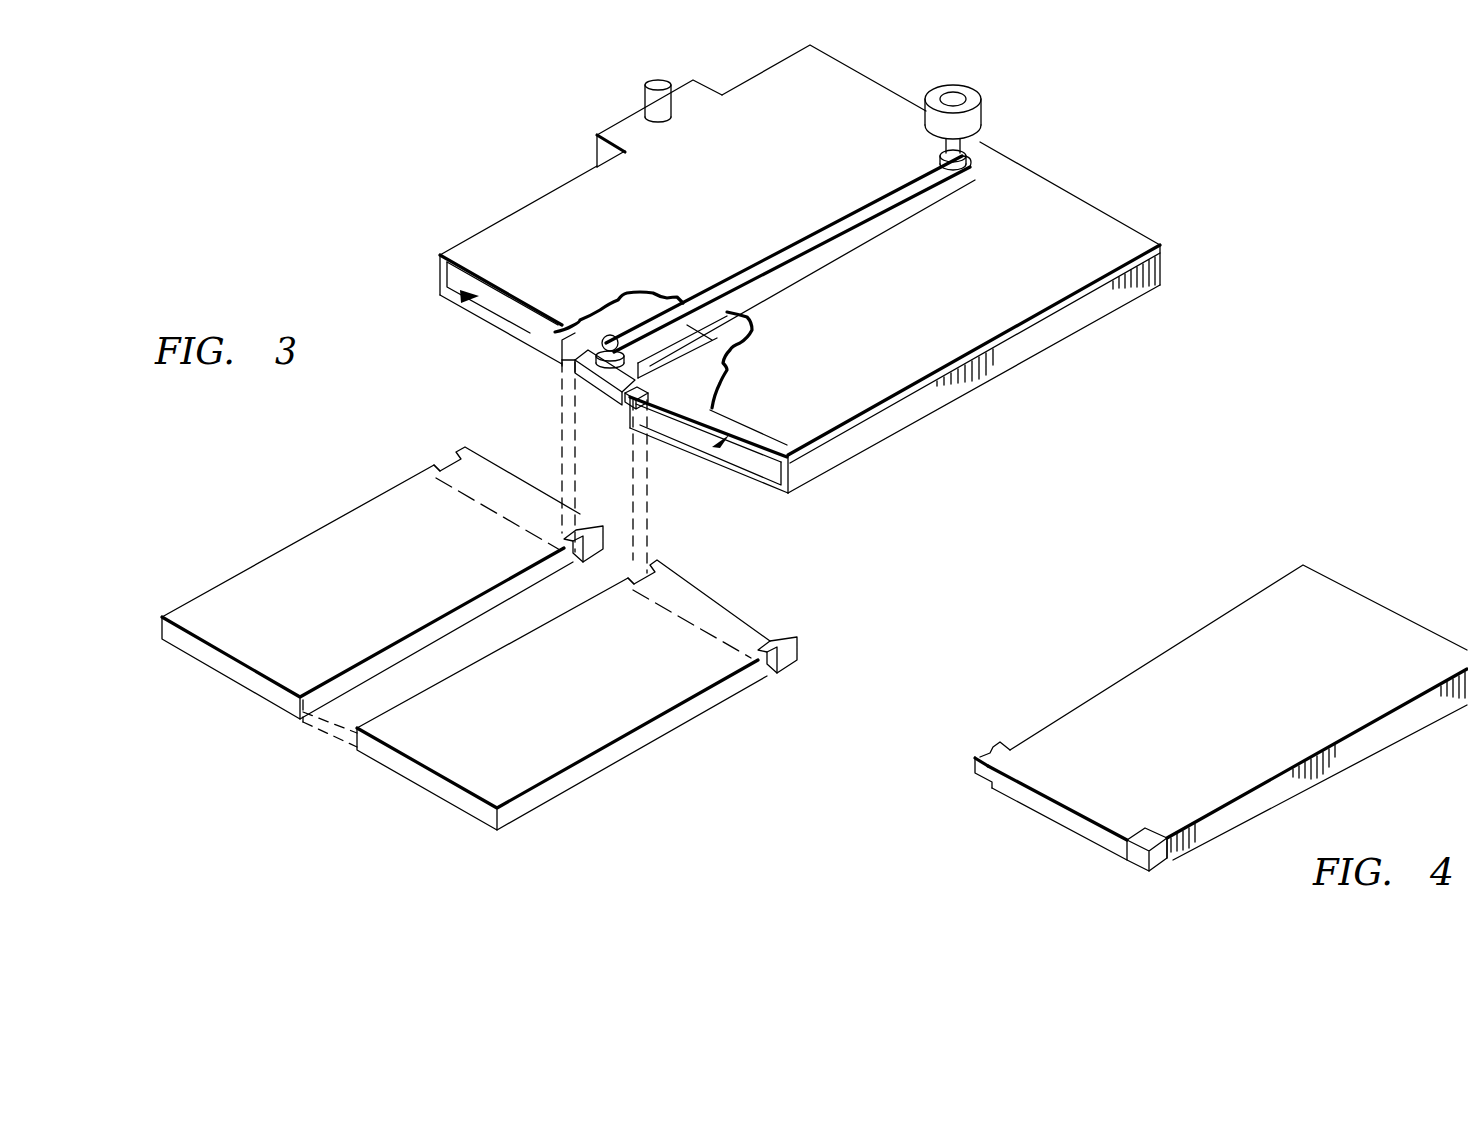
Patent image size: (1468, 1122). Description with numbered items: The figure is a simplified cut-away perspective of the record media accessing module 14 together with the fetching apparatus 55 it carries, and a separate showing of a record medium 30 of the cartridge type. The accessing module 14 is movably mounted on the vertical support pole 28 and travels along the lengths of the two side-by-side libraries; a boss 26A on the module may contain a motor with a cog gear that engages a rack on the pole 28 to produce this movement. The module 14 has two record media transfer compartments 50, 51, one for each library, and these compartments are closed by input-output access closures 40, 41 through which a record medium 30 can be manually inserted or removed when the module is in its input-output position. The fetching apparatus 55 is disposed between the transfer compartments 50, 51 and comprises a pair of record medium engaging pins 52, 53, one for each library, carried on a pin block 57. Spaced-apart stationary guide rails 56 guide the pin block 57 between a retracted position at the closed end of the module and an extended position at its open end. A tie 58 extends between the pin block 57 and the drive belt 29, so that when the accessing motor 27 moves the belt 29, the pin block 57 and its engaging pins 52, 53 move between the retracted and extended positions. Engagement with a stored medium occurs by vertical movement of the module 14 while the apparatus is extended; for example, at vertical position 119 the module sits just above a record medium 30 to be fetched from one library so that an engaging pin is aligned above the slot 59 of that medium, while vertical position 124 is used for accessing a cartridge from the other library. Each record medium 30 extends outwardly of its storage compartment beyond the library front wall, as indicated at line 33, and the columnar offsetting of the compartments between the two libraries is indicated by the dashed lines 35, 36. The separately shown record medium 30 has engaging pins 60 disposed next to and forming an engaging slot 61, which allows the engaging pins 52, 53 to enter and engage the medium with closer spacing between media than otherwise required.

In FIG. 3, the record media accessing module 14 is at (1077, 197).
In FIG. 3, the boss 26A is at (617, 130).
In FIG. 3, the accessing motor 27 is at (958, 93).
In FIG. 3, the pole 28 is at (675, 108).
In FIG. 3, the belt 29 is at (873, 186).
In FIG. 3, the record medium 30 is at (168, 633).
In FIG. 4, the record medium 30 is at (1156, 654).
In FIG. 3, the line of record medium extension 33 is at (505, 516).
In FIG. 3, the dashed line showing storage compartment offsetting 35 is at (338, 714).
In FIG. 3, the dashed line showing storage compartment offsetting 36 is at (325, 742).
In FIG. 3, the IO access closure 40 is at (1162, 250).
In FIG. 3, the IO access closure 41 is at (472, 236).
In FIG. 3, the record media transfer compartment 50 is at (706, 445).
In FIG. 3, the record media transfer compartment 51 is at (455, 299).
In FIG. 3, the record medium engaging pin 52 is at (652, 386).
In FIG. 3, the record medium engaging pin 53 is at (582, 338).
In FIG. 3, the fetching apparatus 55 is at (548, 397).
In FIG. 3, the stationary guide rails 56 is at (745, 323).
In FIG. 3, the pin block 57 is at (605, 398).
In FIG. 3, the tie 58 is at (604, 338).
In FIG. 3, the slot 59 is at (626, 558).
In FIG. 4, the engaging pin 60 is at (978, 760).
In FIG. 4, the engaging slot 61 is at (982, 742).
In FIG. 3, the vertical position 119 is at (502, 446).
In FIG. 3, the vertical position 124 is at (805, 600).